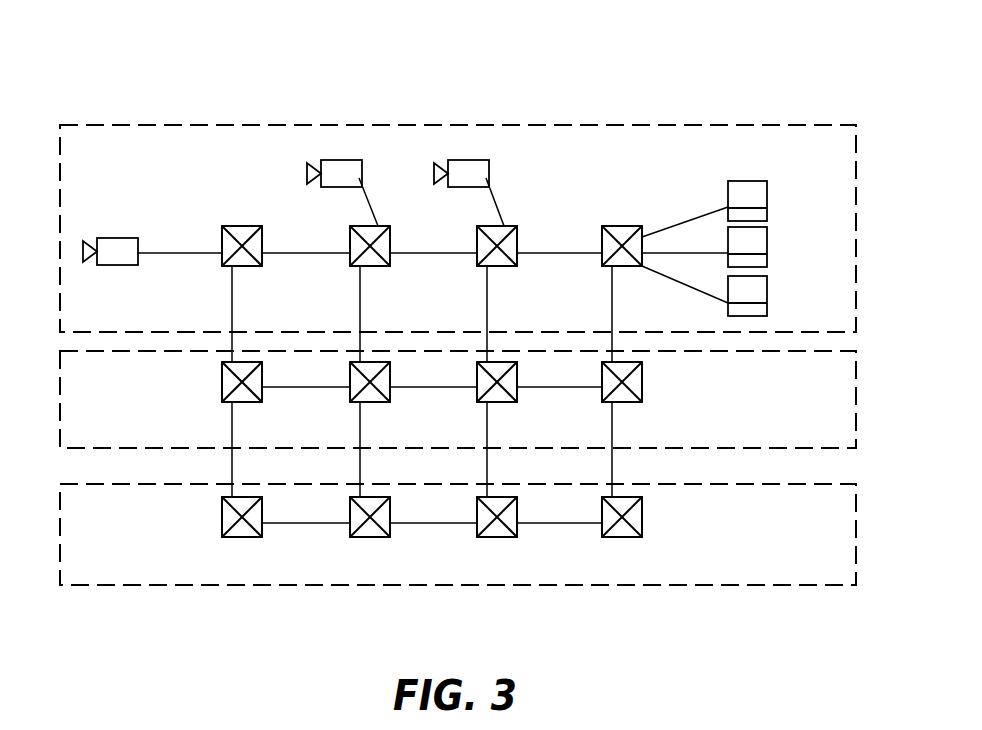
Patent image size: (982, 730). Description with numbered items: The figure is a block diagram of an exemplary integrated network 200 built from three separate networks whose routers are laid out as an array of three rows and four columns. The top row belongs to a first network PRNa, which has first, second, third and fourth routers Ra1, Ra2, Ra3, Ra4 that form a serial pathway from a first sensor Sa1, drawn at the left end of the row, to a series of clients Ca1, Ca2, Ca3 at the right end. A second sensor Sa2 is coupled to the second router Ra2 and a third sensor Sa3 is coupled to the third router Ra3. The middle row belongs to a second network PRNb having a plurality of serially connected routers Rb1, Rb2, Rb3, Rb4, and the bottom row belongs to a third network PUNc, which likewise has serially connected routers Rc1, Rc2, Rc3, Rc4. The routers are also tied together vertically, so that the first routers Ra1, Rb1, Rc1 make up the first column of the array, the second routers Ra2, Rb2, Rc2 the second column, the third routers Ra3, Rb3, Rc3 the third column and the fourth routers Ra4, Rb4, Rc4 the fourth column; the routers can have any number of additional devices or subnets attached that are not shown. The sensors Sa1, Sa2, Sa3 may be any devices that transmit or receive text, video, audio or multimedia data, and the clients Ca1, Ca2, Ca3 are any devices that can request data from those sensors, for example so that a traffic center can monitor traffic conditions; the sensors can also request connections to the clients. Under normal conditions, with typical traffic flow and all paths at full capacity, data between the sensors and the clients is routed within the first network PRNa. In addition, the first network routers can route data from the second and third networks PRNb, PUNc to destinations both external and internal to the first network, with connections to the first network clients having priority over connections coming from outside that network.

The integrated network 200 is at (486, 60).
The first network PRNa is at (458, 228).
The second network PRNb is at (458, 399).
The third network PUNc is at (458, 534).
The first sensor Sa1 is at (113, 266).
The second sensor Sa2 is at (343, 160).
The third sensor Sa3 is at (470, 160).
The first router Ra1 is at (243, 266).
The second router Ra2 is at (371, 266).
The third router Ra3 is at (498, 266).
The fourth router Ra4 is at (623, 266).
The first router of second network Rb1 is at (243, 401).
The second router of second network Rb2 is at (371, 401).
The third router of second network Rb3 is at (498, 401).
The fourth router of second network Rb4 is at (623, 401).
The first router of third network Rc1 is at (243, 537).
The second router of third network Rc2 is at (371, 537).
The third router of third network Rc3 is at (498, 537).
The fourth router of third network Rc4 is at (623, 537).
The first client Ca1 is at (767, 201).
The second client Ca2 is at (767, 247).
The third client Ca3 is at (767, 296).